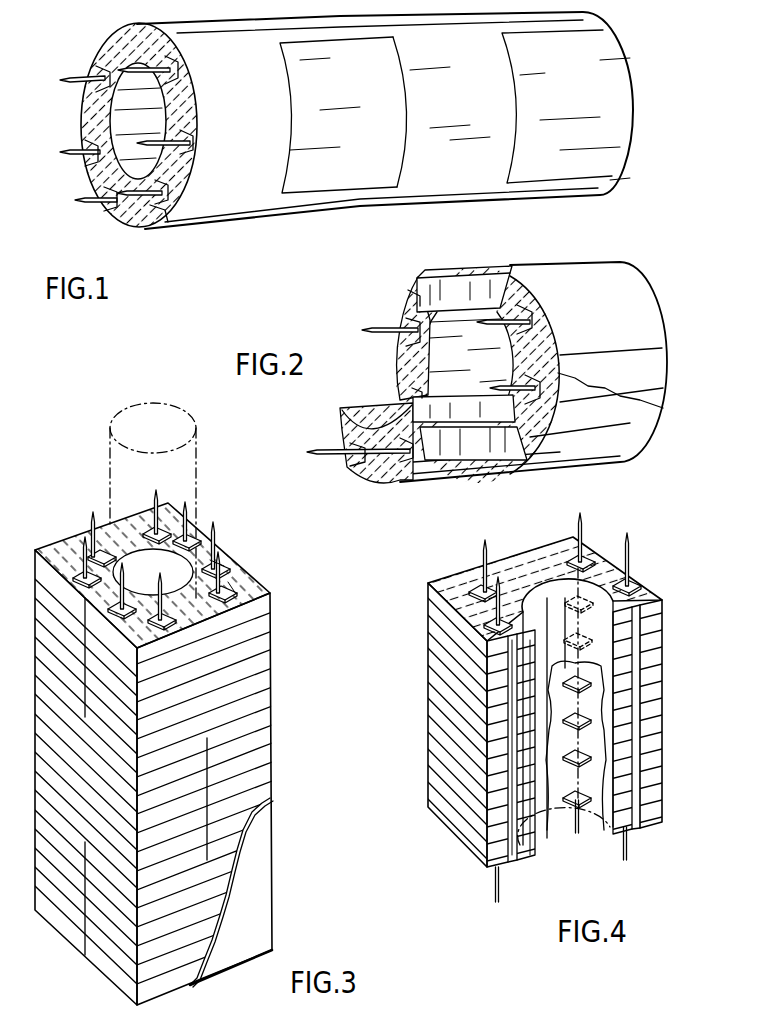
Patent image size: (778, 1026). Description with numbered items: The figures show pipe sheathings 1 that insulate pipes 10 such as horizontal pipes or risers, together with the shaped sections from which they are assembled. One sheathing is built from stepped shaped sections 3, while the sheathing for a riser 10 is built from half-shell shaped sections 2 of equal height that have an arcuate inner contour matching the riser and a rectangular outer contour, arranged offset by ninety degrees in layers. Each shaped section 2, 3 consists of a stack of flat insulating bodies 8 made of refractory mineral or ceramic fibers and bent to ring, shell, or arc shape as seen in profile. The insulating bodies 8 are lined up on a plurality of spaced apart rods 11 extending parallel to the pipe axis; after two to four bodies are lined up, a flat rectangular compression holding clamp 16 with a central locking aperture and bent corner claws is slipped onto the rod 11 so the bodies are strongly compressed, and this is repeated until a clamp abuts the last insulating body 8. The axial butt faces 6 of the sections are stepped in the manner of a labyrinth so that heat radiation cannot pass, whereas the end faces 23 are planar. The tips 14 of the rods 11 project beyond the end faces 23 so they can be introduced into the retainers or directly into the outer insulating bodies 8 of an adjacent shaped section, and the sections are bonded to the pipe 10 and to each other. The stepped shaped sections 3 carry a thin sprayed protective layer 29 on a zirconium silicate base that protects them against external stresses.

In FIG. 1, the pipe sheathing 1 is at (325, 219).
In FIG. 3, the pipe sheathing 1 is at (180, 754).
In FIG. 3, the half-shell shaped section 2 is at (272, 648).
In FIG. 1, the stepped shaped section 3 is at (437, 193).
In FIG. 2, the stepped shaped section 3 is at (622, 444).
In FIG. 1, the axial butt face 6 is at (98, 168).
In FIG. 2, the axial butt face 6 is at (476, 283).
In FIG. 4, the axial butt face 6 is at (523, 858).
In FIG. 3, the flat insulating body 8 is at (258, 698).
In FIG. 4, the flat insulating body 8 is at (430, 622).
In FIG. 3, the pipe 10 is at (178, 466).
In FIG. 1, the rod 11 is at (100, 201).
In FIG. 2, the rod 11 is at (372, 330).
In FIG. 3, the rod 11 is at (177, 546).
In FIG. 4, the rod 11 is at (625, 830).
In FIG. 3, the rod tip 14 is at (188, 503).
In FIG. 1, the compression holding clamp 16 is at (163, 217).
In FIG. 2, the compression holding clamp 16 is at (405, 340).
In FIG. 3, the compression holding clamp 16 is at (225, 590).
In FIG. 4, the compression holding clamp 16 is at (575, 805).
In FIG. 2, the end face 23 is at (410, 298).
In FIG. 3, the end face 23 is at (258, 596).
In FIG. 4, the end face 23 is at (458, 590).
In FIG. 3, the protective layer 29 is at (257, 912).